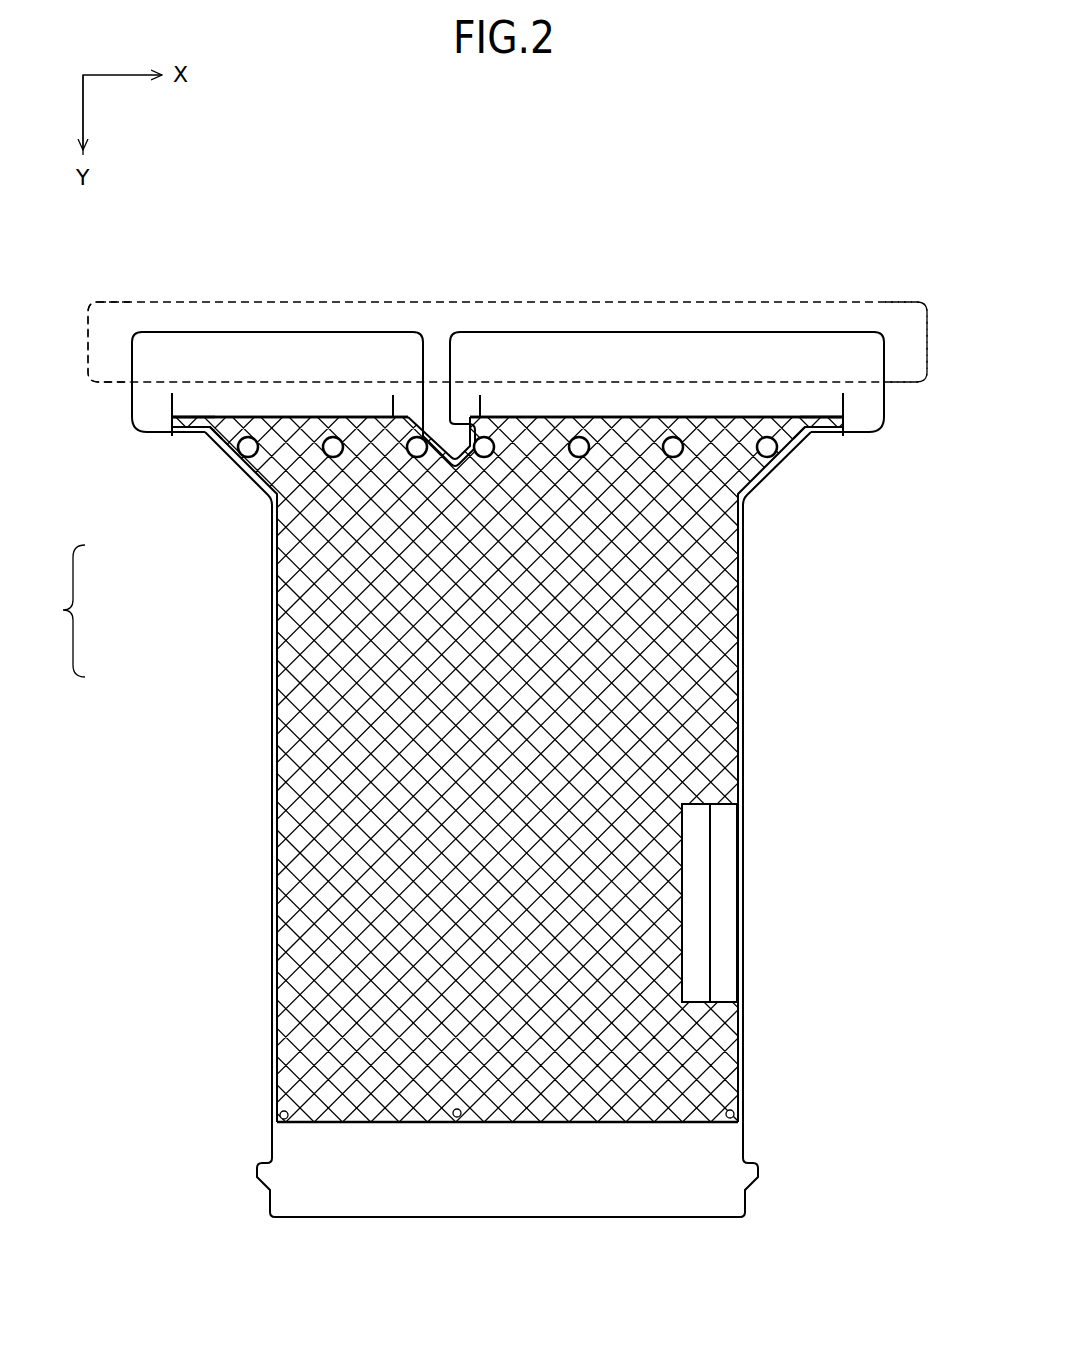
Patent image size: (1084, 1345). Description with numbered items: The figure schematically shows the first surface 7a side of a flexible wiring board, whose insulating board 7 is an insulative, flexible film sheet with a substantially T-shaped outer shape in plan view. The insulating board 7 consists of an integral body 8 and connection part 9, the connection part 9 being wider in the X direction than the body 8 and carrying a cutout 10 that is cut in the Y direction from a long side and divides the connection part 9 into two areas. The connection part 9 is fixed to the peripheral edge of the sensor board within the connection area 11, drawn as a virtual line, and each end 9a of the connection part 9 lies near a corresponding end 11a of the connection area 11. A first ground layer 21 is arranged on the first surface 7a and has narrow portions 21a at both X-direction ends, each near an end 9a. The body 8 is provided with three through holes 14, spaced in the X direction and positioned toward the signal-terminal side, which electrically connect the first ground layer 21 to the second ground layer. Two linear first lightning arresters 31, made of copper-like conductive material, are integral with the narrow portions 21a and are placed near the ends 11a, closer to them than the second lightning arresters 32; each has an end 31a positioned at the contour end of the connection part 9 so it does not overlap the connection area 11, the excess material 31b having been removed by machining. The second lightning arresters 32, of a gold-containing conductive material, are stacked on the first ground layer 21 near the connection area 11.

The insulating board 7 is at (64, 611).
The first surface 7a is at (793, 355).
The body 8 is at (268, 628).
The connection part 9 is at (124, 410).
The end of connection part 9a is at (128, 399).
The cutout 10 is at (438, 357).
The connection area 11 is at (377, 296).
The end of connection area 11a is at (88, 342).
The through hole 14 is at (279, 1111).
The first ground layer 21 is at (543, 405).
The narrow portion 21a is at (187, 417).
The first lightning arrester 31 is at (145, 432).
The end of first lightning arrester 31a is at (174, 423).
The excess material 31b is at (172, 436).
The second lightning arrester 32 is at (248, 436).